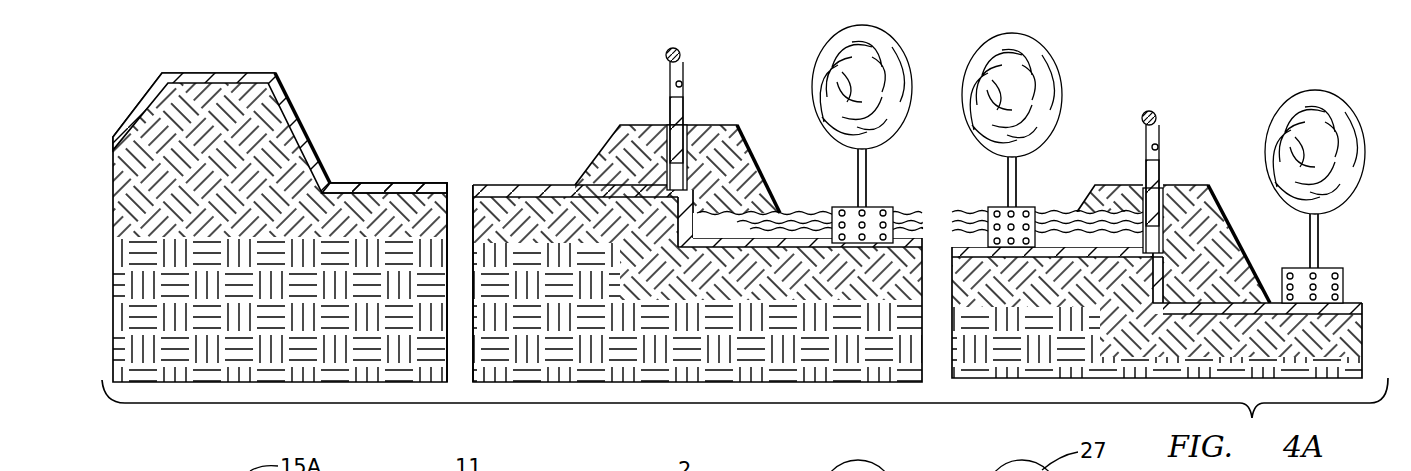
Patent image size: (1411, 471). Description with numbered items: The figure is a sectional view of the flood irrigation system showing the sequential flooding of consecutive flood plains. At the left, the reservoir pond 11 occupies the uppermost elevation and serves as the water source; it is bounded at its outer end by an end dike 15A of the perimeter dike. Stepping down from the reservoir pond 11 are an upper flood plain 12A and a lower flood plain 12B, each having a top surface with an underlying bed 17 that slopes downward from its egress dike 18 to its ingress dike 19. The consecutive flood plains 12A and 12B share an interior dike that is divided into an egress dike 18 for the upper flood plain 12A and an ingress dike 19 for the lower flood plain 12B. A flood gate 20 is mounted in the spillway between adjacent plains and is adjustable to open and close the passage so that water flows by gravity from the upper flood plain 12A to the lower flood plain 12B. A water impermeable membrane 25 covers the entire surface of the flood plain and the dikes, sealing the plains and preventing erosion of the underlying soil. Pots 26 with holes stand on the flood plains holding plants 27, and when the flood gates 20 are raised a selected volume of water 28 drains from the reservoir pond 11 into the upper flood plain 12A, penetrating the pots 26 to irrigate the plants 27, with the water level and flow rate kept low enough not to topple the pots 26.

The reservoir pond 11 is at (400, 92).
The upper flood plain 12A is at (793, 109).
The lower flood plain 12B is at (1246, 162).
The end dike 15A is at (227, 73).
The bed 17 is at (452, 222).
The egress dike 18 is at (603, 148).
The ingress dike 19 is at (758, 166).
The flood gate 20 is at (668, 100).
The water impermeable membrane 25 is at (433, 183).
The pot 26 is at (1330, 268).
The plant 27 is at (1323, 107).
The water 28 is at (908, 207).